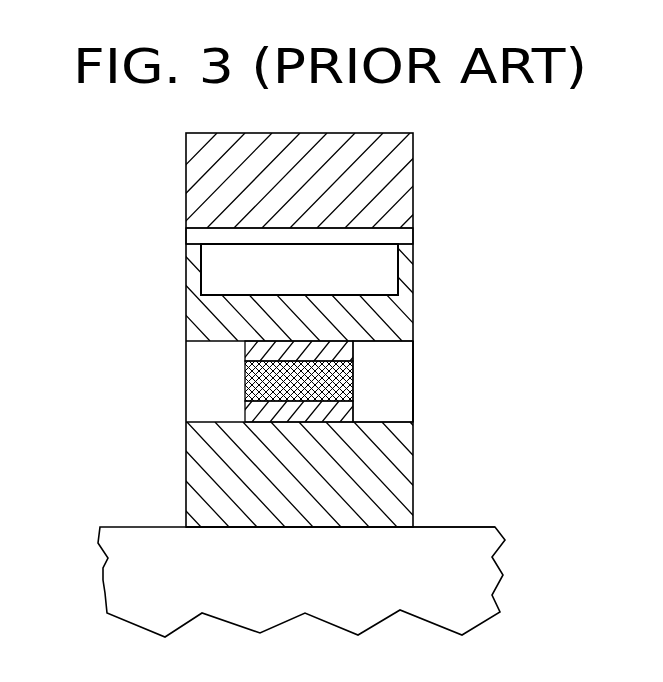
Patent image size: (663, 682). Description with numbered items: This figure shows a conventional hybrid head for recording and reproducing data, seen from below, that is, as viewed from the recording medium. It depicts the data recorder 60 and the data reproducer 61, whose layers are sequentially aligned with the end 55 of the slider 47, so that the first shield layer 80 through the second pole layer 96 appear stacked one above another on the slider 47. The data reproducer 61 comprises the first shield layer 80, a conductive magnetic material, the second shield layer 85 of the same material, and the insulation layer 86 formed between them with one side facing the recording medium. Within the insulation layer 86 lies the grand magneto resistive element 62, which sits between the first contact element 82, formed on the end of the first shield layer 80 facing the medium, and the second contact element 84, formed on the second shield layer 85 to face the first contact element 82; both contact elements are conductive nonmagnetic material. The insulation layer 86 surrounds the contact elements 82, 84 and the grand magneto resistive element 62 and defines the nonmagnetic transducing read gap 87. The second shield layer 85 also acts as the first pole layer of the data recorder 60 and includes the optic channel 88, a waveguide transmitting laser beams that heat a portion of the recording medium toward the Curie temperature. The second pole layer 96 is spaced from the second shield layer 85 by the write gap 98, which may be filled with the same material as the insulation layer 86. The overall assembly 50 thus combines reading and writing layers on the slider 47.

The slider 47 is at (316, 589).
The prior art capacitor structure 50 is at (128, 218).
The end of the slider 55 is at (475, 526).
The data recorder 60 is at (314, 235).
The data reproducer 61 is at (321, 378).
The grand magneto resistive element 62 is at (245, 380).
The first shield layer 80 is at (208, 483).
The first contact element 82 is at (245, 412).
The second contact element 84 is at (245, 352).
The second shield layer 85 is at (301, 292).
The insulation layer 86 is at (440, 383).
The nonmagnetic transducing read gap 87 is at (393, 404).
The optic channel 88 is at (306, 278).
The second pole layer 96 is at (193, 174).
The write gap 98 is at (405, 236).